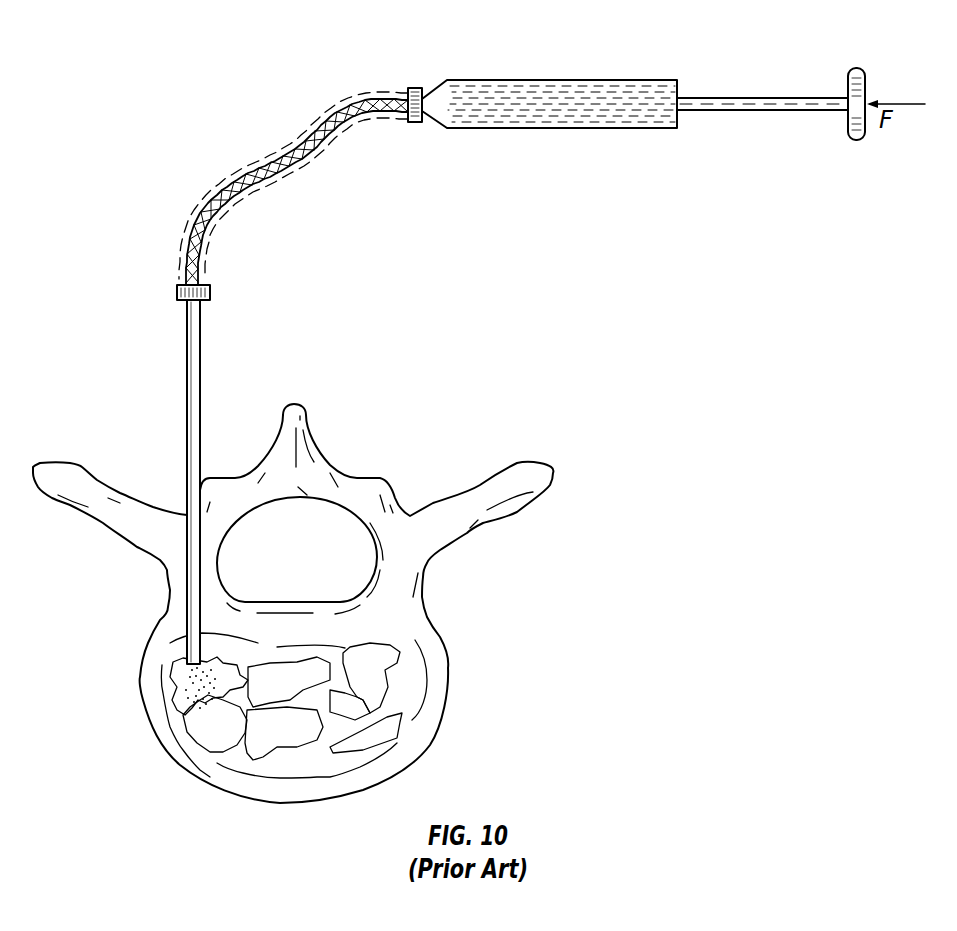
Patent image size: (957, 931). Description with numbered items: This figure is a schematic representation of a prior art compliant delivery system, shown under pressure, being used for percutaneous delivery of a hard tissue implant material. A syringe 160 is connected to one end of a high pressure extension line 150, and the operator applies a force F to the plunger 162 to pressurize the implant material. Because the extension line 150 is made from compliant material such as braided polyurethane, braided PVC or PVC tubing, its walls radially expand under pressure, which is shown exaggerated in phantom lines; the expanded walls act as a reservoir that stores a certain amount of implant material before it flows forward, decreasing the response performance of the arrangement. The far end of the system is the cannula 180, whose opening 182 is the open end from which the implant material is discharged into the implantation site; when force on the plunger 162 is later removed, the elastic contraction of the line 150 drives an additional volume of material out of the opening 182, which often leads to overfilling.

The high pressure extension line 150 is at (282, 160).
The syringe 160 is at (560, 130).
The plunger 162 is at (855, 67).
The cannula 180 is at (188, 415).
The opening 182 is at (183, 679).